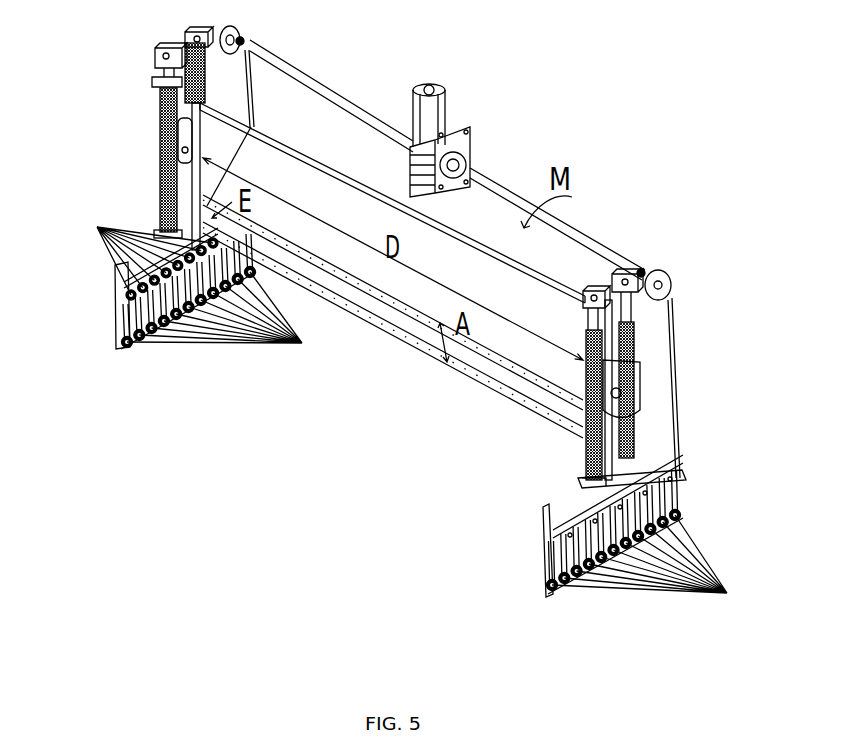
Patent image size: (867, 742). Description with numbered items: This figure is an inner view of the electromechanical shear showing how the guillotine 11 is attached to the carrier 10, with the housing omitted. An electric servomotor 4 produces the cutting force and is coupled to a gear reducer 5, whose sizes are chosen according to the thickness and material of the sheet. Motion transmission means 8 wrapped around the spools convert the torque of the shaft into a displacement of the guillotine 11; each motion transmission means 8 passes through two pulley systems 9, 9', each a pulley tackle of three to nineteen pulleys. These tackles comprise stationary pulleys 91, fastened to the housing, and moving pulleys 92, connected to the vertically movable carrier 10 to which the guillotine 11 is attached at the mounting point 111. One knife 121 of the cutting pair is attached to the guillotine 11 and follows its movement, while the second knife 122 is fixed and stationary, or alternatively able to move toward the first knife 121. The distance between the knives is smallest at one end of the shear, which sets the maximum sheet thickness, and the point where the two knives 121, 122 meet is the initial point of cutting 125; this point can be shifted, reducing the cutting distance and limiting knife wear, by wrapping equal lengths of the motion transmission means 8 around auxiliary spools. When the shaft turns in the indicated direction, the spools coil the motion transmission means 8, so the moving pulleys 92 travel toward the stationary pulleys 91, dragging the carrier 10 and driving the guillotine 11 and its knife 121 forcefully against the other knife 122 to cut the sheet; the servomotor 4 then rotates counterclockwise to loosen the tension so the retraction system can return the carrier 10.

The electric servomotor 4 is at (440, 93).
The gear reducer 5 is at (470, 138).
The motion transmission means 8 is at (247, 127).
The pulley system 9 is at (188, 313).
The pulley system 9' is at (392, 416).
The carrier 10 is at (167, 95).
The guillotine 11 is at (260, 183).
The stationary pulleys 91 is at (342, 344).
The moving pulleys 92 is at (97, 226).
The mounting point 111 is at (167, 143).
The knife 121 is at (477, 372).
The second knife 122 is at (540, 420).
The initial point of cutting 125 is at (308, 125).